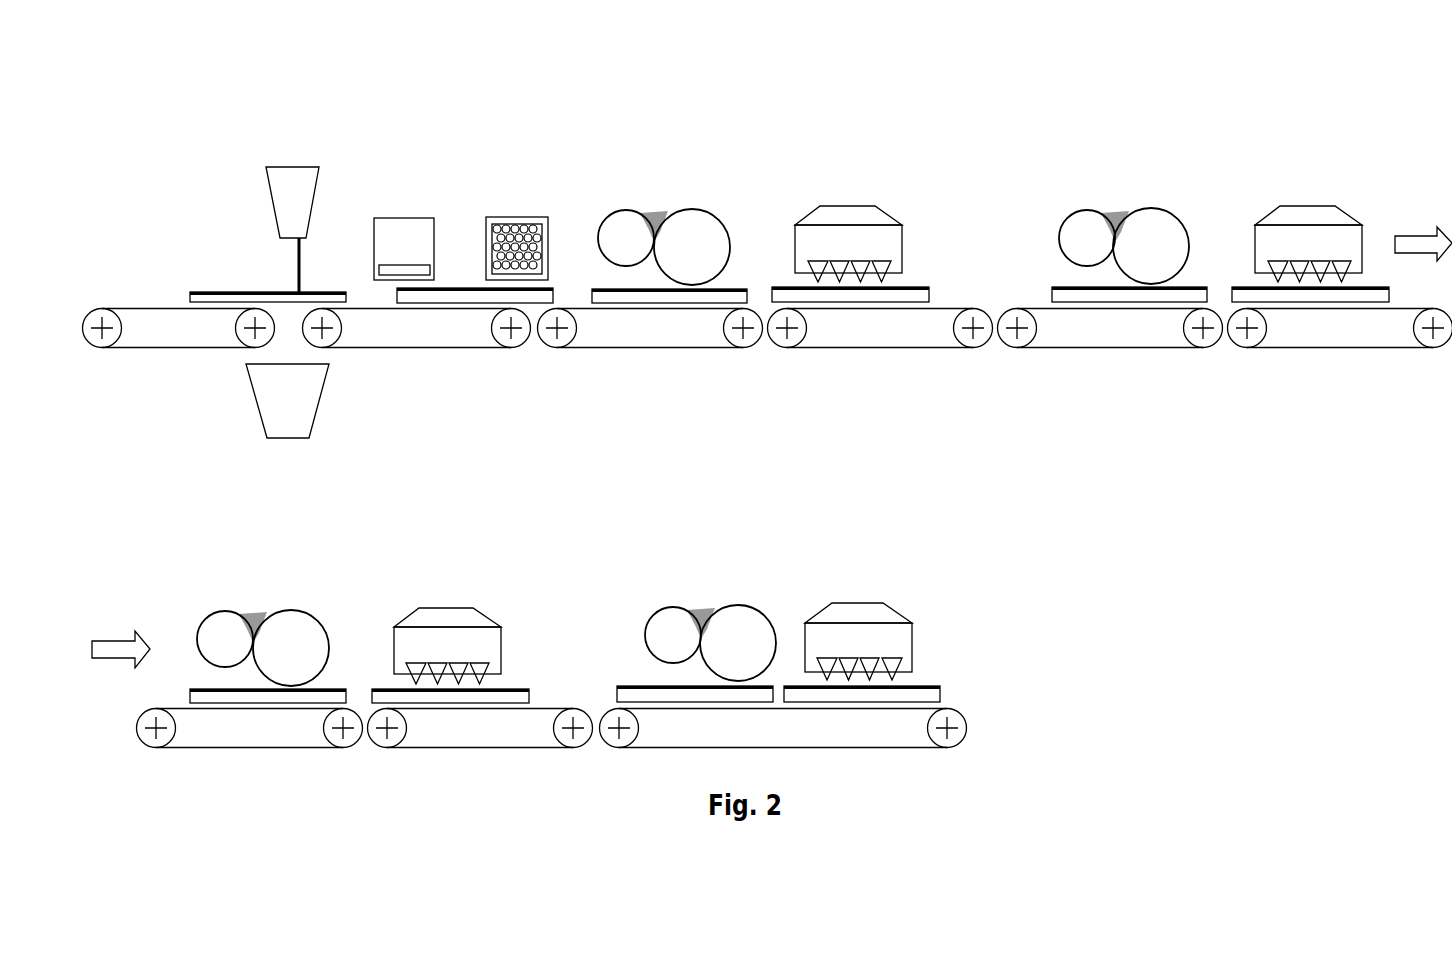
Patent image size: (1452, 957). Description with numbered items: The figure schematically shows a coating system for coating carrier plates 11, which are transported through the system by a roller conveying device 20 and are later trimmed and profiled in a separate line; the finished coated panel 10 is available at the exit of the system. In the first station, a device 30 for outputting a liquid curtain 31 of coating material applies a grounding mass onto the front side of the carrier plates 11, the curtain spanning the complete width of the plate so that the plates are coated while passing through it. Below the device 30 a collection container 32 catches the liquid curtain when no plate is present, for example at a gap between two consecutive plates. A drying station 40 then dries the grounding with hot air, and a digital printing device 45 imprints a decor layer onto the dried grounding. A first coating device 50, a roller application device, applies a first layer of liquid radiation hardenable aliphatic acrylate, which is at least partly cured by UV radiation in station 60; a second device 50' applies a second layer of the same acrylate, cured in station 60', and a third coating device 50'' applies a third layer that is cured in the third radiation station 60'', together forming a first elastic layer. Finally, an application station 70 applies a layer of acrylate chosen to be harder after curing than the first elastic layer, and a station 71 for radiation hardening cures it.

The fiber composite component 10 is at (933, 677).
The carrier plate 11 is at (237, 284).
The roller conveying device 20 is at (152, 333).
The device for outputting the curtain 30 is at (292, 184).
The liquid curtain 31 is at (299, 257).
The collection container 32 is at (295, 398).
The drying station 40 is at (414, 218).
The digital printing device 45 is at (517, 217).
The first coating device 50 is at (664, 210).
The second device 50' is at (1124, 210).
The third coating device 50'' is at (263, 611).
The station 60 is at (848, 209).
The station 60' is at (1308, 209).
The third radiation station 60'' is at (447, 610).
The application station 70 is at (713, 589).
The station for radiation hardening 71 is at (858, 592).